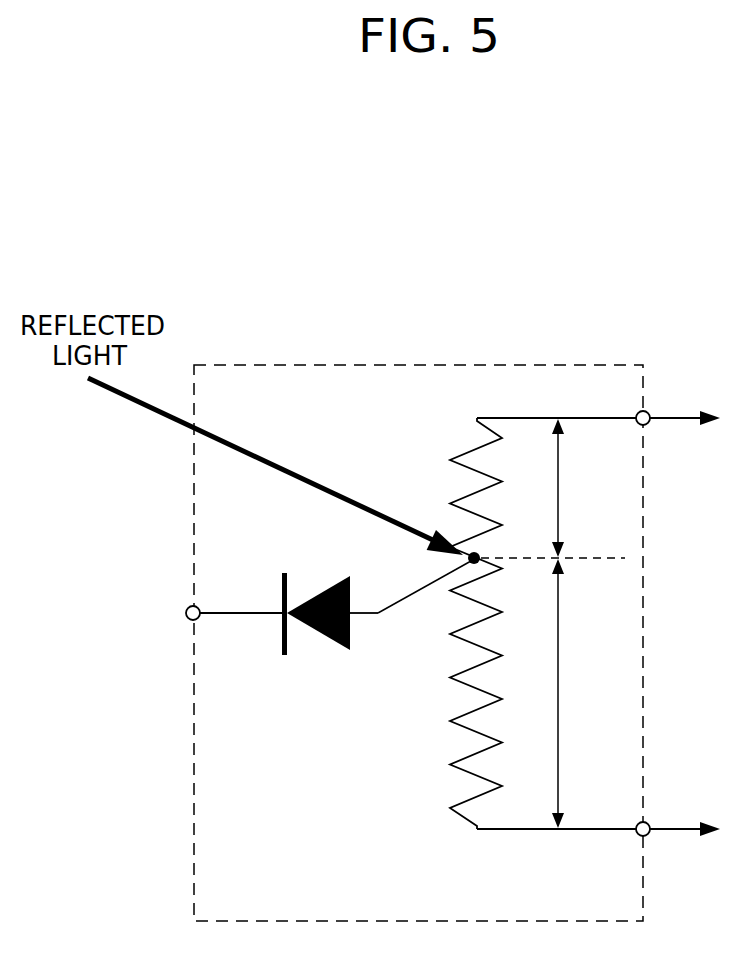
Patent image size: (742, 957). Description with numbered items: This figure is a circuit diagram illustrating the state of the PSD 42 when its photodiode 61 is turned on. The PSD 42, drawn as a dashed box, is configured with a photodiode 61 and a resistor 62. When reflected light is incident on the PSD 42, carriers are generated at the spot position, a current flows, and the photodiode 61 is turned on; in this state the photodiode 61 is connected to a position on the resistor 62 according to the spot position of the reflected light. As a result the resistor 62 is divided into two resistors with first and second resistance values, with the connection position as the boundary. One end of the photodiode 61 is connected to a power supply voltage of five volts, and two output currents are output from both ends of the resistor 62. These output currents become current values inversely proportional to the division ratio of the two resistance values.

The PSD 42 is at (420, 365).
The photodiode 61 is at (325, 636).
The resistor 62 is at (455, 768).